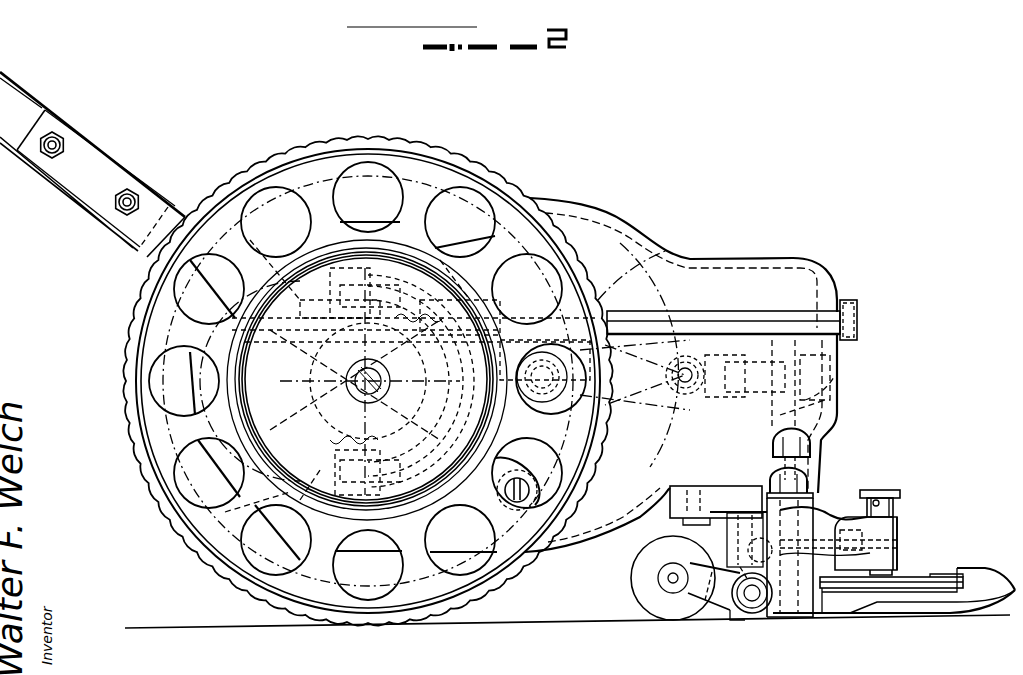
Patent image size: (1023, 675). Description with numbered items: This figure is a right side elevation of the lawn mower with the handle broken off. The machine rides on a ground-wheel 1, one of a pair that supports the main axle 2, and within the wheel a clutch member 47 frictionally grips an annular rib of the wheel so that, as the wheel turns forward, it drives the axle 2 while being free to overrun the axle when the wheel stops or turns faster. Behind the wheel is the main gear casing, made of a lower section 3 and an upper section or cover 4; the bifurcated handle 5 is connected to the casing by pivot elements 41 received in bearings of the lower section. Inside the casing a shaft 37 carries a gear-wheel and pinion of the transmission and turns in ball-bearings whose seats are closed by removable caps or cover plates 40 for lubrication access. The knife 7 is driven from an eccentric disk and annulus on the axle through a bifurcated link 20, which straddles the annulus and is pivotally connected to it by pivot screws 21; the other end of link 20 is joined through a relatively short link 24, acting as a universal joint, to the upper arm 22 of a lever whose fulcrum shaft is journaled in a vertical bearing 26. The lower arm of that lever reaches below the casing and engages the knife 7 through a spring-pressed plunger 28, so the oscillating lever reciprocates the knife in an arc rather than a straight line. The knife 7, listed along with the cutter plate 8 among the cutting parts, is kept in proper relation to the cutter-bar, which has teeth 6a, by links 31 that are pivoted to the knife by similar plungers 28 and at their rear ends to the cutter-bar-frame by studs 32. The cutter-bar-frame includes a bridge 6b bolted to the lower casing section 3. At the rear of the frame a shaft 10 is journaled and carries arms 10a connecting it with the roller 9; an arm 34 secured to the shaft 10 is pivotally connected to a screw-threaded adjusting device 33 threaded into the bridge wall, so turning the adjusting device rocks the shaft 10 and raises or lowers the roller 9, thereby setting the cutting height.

The ground-wheel 1 is at (446, 138).
The main axle 2 is at (346, 373).
The lower section of main gear casing 3 is at (813, 377).
The upper section or cover 4 is at (720, 275).
The bifurcated handle 5 is at (103, 163).
The teeth 6a is at (978, 582).
The bridge 6b is at (657, 527).
The knife 7 is at (900, 585).
The cutter plate 8 is at (935, 583).
The roller 9 is at (648, 598).
The shaft 10 is at (745, 605).
The arms 10a is at (700, 598).
The bifurcated link 20 is at (655, 412).
The pivot screws 21 is at (330, 265).
The upper arm 22 is at (817, 373).
The link 24 is at (740, 330).
The vertical bearing 26 is at (790, 415).
The spring-pressed plunger 28 is at (888, 567).
The links 31 is at (830, 502).
The pivots or studs 32 is at (800, 465).
The screw-threaded adjusting device 33 is at (890, 490).
The arm 34 is at (715, 553).
The shaft 37 is at (641, 275).
The caps or cover plates 40 is at (592, 385).
The pivot elements 41 is at (542, 425).
The clutch member 47 is at (420, 265).